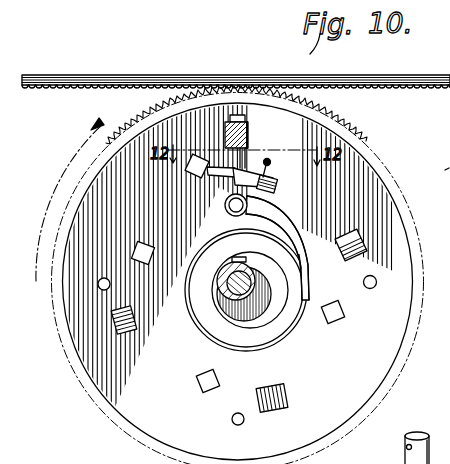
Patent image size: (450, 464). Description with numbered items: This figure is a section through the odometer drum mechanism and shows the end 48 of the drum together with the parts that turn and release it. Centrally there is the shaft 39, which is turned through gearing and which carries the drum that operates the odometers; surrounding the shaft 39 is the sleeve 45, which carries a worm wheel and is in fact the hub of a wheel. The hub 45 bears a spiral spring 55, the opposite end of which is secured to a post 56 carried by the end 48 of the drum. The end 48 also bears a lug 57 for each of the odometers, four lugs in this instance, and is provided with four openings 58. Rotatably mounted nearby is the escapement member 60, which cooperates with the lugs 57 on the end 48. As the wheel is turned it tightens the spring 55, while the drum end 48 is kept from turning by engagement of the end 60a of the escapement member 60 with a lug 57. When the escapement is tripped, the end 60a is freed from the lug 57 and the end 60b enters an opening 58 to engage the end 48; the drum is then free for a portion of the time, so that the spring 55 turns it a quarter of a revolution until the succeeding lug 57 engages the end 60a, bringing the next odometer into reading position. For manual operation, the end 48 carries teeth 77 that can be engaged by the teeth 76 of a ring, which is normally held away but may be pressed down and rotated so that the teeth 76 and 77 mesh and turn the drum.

The teeth 76 is at (87, 88).
The teeth 77 is at (143, 116).
The end of the drum 48 is at (110, 370).
The spiral spring 55 is at (265, 337).
The shaft 39 is at (217, 277).
The sleeve 45 is at (227, 317).
The post 56 is at (226, 210).
The lug 57 is at (200, 176).
The opening 58 is at (275, 188).
The escapement member 60 is at (252, 149).
The end of the escapement mechanism 60a is at (214, 156).
The end of the escapement mechanism 60b is at (277, 183).